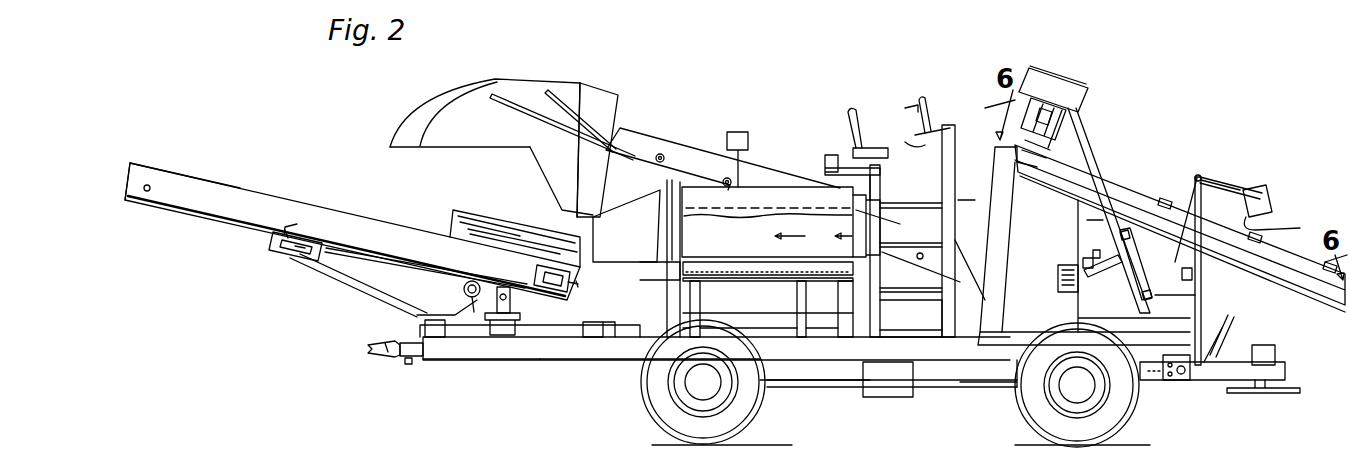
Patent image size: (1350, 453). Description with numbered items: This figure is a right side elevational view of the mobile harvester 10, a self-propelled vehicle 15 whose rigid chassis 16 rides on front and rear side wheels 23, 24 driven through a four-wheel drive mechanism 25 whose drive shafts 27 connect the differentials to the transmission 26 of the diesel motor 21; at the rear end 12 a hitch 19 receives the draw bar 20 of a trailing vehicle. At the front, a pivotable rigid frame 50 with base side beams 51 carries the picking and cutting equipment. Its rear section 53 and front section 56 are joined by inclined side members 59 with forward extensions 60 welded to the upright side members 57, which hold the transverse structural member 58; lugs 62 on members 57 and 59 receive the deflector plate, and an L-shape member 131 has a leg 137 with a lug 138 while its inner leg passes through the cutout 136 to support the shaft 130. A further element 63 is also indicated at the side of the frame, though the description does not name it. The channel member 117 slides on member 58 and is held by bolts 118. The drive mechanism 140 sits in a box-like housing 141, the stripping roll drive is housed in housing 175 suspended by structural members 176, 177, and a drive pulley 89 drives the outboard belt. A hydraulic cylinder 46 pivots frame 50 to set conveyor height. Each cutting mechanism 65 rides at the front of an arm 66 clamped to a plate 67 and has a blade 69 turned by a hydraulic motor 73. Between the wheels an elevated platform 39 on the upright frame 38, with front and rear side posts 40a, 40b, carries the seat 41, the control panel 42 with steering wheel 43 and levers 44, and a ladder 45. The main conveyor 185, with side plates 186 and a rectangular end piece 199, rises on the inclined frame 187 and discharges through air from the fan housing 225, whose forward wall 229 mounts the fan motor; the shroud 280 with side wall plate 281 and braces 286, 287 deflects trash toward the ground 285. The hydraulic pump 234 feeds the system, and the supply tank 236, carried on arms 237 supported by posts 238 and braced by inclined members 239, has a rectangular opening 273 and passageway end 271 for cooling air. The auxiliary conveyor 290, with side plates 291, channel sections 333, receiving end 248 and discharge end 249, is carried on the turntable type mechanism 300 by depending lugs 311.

The mobile harvester 10 is at (767, 84).
The rear end of the vehicle 12 is at (436, 362).
The self-propelled vehicle 15 is at (518, 365).
The rigid chassis 16 is at (578, 352).
The hitch 19 is at (420, 360).
The draw bar 20 is at (370, 353).
The diesel motor 21 is at (762, 303).
The front side wheels 23 is at (1138, 415).
The rear side wheels 24 is at (652, 408).
The four-wheel drive mechanism 25 is at (825, 402).
The motor transmission 26 is at (888, 398).
The drive shafts 27 is at (855, 398).
The upright frame 38 is at (965, 140).
The elevated platform 39 is at (882, 228).
The upright front side post 40a is at (956, 188).
The upright rear side post 40b is at (880, 185).
The seat 41 is at (858, 122).
The control panel 42 is at (932, 117).
The steering wheel 43 is at (918, 102).
The levers 44 is at (908, 142).
The ladder 45 is at (914, 292).
The hydraulic cylinder 46 is at (942, 312).
The rigid frame 50 is at (1012, 330).
The side beams 51 is at (1030, 332).
The rear section of frame 50 53 is at (1085, 103).
The front section of frame 50 56 is at (1200, 288).
The upright side members 57 is at (1198, 270).
The transverse structural member 58 is at (1206, 178).
The inclined side members 59 is at (1100, 210).
The forward extensions 60 is at (1160, 312).
The lugs 62 is at (1140, 275).
The bracket 63 is at (974, 212).
The cutting mechanism 65 is at (1285, 370).
The arm 66 is at (1212, 350).
The plate 67 is at (1188, 383).
The blade 69 is at (1245, 398).
The hydraulic motor 73 is at (1270, 346).
The drive pulley 89 is at (1085, 128).
The channel member 117 is at (1200, 176).
The bolts 118 is at (1196, 176).
The elongated shaft 130 is at (1250, 230).
The L-shape member 131 is at (1080, 260).
The cutout 136 is at (1080, 278).
The leg 137 is at (1106, 286).
The lug 138 is at (1092, 250).
The drive mechanism 140 is at (1040, 66).
The box like housing 141 is at (1064, 76).
The box like housing 175 is at (1270, 194).
The structural member 176 is at (1236, 190).
The structural member 177 is at (1270, 227).
The main conveyor 185 is at (743, 180).
The side plates 186 is at (716, 147).
The inclined frame 187 is at (700, 239).
The rectangular end piece 199 is at (1218, 330).
The fan housing 225 is at (602, 262).
The forward wall 229 is at (660, 290).
The fluid pump 234 is at (590, 320).
The hydraulic fluid supply tank 236 is at (723, 178).
The laterally extending arms 237 is at (693, 284).
The posts 238 is at (710, 318).
The inclined members 239 is at (843, 288).
The receiving end of the auxiliary conveyor 248 is at (586, 228).
The discharge end of the auxiliary conveyor 249 is at (131, 164).
The end of passageway 271 is at (862, 215).
The rectangular opening 273 is at (668, 220).
The shroud 280 is at (445, 83).
The side wall plate 281 is at (448, 150).
The ground 285 is at (752, 445).
The brace 286 is at (523, 120).
The brace 287 is at (582, 86).
The auxiliary conveyor 290 is at (322, 206).
The side plates 291 is at (184, 177).
The turntable type mechanism 300 is at (518, 313).
The depending lugs 311 is at (552, 288).
The channel sections 333 is at (284, 258).